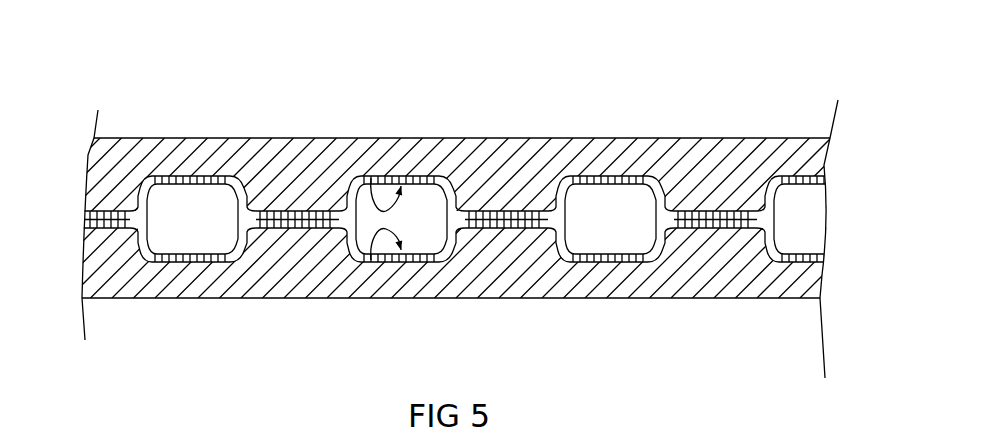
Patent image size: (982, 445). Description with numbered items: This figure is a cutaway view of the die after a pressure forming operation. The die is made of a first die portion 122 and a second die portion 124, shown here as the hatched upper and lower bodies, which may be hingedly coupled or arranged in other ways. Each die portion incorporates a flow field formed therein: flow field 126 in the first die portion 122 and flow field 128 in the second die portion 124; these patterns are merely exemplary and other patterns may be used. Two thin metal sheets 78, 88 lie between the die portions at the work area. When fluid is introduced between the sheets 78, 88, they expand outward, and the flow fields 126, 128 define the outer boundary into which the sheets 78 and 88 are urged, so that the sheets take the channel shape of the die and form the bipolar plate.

The sheet 78 is at (795, 182).
The sheet 88 is at (792, 263).
The first die portion 122 is at (520, 158).
The second die portion 124 is at (520, 290).
The flow field 126 is at (371, 178).
The flow field 128 is at (371, 260).